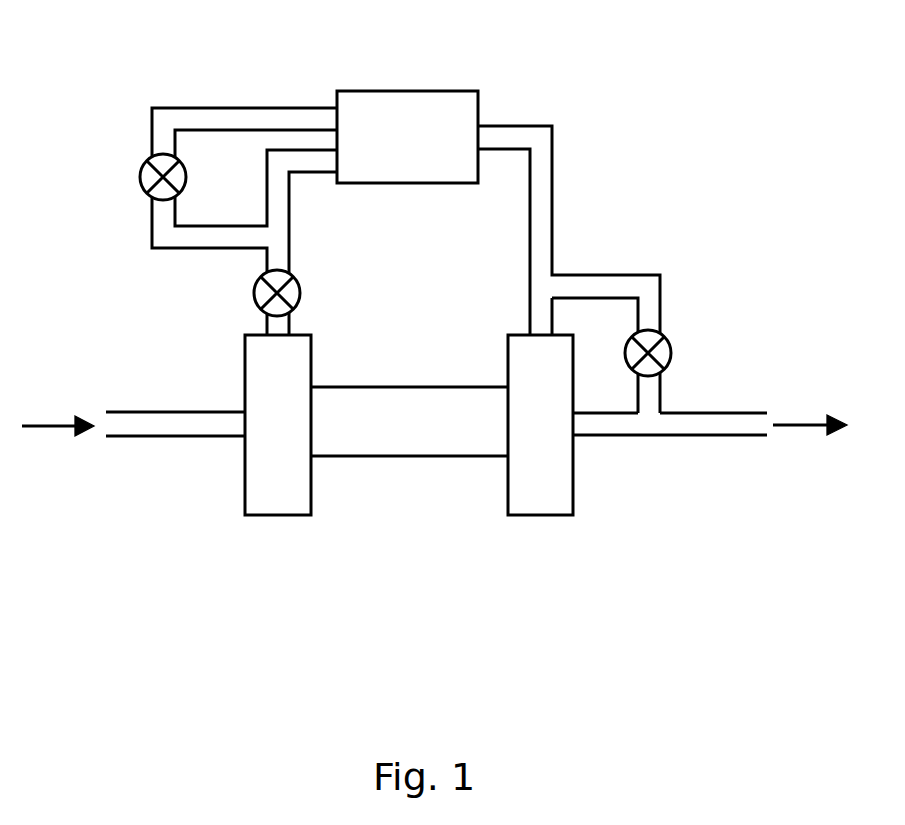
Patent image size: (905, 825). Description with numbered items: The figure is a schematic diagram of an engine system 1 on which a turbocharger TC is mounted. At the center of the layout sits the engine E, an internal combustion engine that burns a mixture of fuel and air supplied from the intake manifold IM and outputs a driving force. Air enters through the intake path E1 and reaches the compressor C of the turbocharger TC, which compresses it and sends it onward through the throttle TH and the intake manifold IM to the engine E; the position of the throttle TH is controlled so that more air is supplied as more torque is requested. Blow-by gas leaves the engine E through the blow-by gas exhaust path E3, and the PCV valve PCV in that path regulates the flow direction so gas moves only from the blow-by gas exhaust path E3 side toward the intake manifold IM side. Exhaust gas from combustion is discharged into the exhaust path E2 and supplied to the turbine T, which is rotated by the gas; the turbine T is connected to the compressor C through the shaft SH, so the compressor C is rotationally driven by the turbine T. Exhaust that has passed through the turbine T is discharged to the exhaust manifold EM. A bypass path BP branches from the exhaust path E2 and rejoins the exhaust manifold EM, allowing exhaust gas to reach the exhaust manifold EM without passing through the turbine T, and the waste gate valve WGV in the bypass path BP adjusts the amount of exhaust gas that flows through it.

The engine system 1 is at (797, 37).
The engine E is at (403, 90).
The blow-by gas exhaust path E3 is at (152, 123).
The PCV valve PCV is at (140, 178).
The intake manifold IM is at (290, 238).
The throttle TH is at (301, 294).
The exhaust path E2 is at (553, 193).
The bypass path BP is at (661, 303).
The waste gate valve WGV is at (671, 353).
The intake path E1 is at (166, 437).
The exhaust manifold EM is at (737, 436).
The turbocharger TC is at (415, 499).
The compressor C is at (275, 516).
The turbine T is at (540, 516).
The shaft SH is at (409, 454).